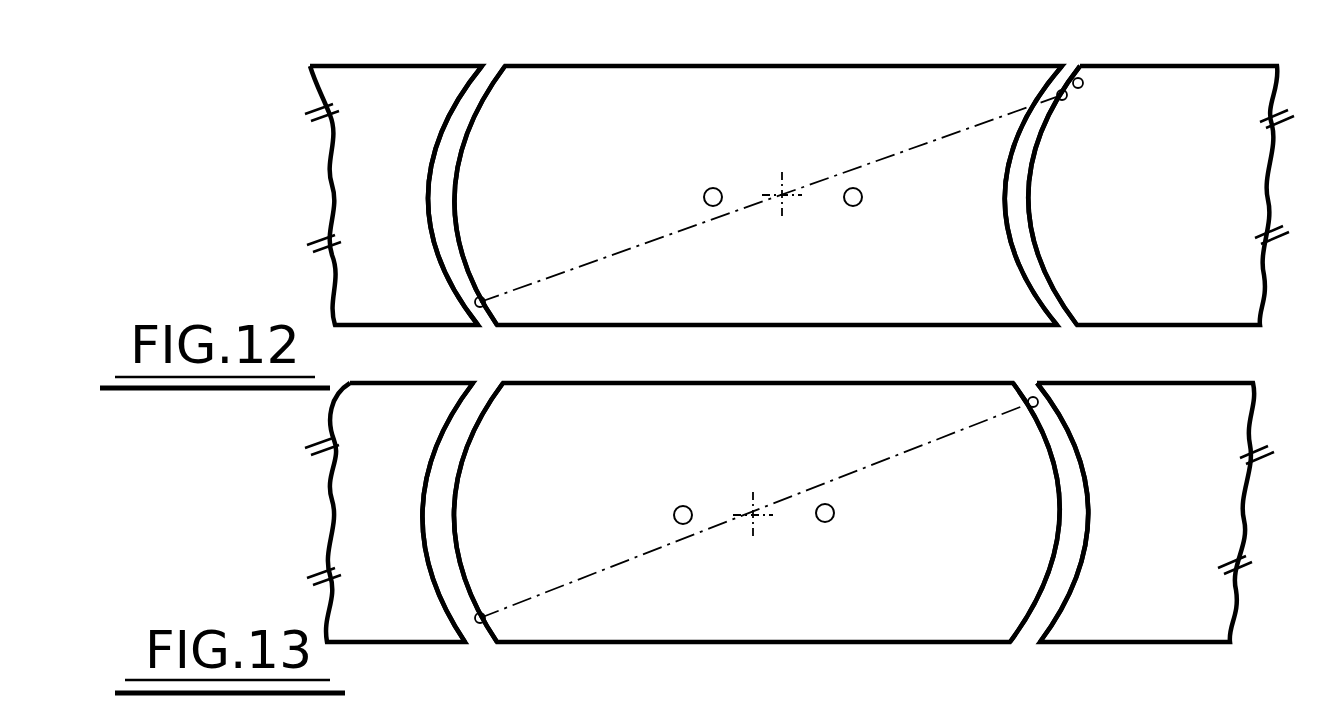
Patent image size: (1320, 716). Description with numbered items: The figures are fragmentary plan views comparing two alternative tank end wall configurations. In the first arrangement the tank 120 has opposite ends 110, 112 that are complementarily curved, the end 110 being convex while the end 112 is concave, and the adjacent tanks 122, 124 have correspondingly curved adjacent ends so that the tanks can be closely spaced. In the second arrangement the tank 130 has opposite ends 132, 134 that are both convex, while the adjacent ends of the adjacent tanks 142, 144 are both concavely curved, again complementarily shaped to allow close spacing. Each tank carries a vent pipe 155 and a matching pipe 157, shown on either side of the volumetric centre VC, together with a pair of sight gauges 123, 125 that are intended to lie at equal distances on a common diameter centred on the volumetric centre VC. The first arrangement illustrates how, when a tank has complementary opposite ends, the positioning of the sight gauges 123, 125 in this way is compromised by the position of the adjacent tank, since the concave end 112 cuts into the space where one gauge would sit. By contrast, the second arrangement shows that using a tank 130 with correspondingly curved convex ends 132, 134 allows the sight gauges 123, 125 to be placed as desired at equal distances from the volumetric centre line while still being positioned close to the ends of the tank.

In FIG. 12, the end 110 is at (480, 102).
In FIG. 12, the end 112 is at (1045, 72).
In FIG. 12, the tank 120 is at (658, 137).
In FIG. 12, the adjacent tank 122 is at (390, 155).
In FIG. 12, the sight gauge 123 is at (483, 308).
In FIG. 13, the sight gauge 123 is at (485, 628).
In FIG. 12, the adjacent tank 124 is at (1185, 140).
In FIG. 12, the sight gauge 125 is at (1077, 77).
In FIG. 13, the sight gauge 125 is at (1034, 396).
In FIG. 13, the tank 130 is at (636, 455).
In FIG. 13, the end 132 is at (483, 422).
In FIG. 13, the end 134 is at (1013, 390).
In FIG. 13, the adjacent tank 142 is at (405, 455).
In FIG. 13, the adjacent tank 144 is at (1180, 455).
In FIG. 12, the vent pipe 155 is at (705, 191).
In FIG. 13, the vent pipe 155 is at (676, 507).
In FIG. 12, the matching pipe 157 is at (863, 193).
In FIG. 13, the matching pipe 157 is at (834, 508).
In FIG. 12, the volumetric centre VC is at (790, 184).
In FIG. 13, the volumetric centre VC is at (764, 500).